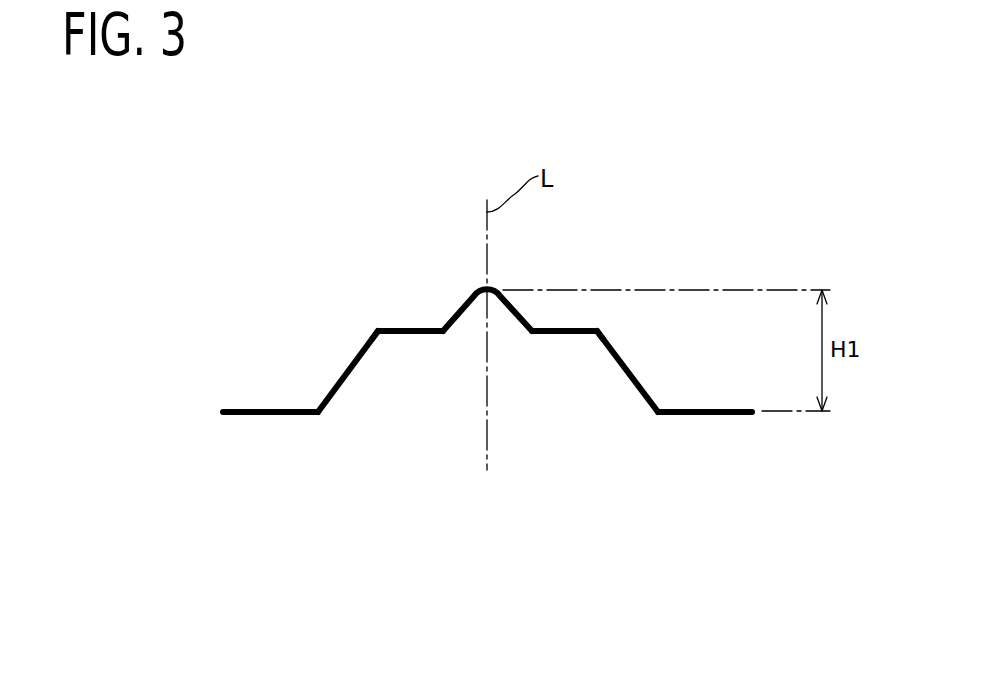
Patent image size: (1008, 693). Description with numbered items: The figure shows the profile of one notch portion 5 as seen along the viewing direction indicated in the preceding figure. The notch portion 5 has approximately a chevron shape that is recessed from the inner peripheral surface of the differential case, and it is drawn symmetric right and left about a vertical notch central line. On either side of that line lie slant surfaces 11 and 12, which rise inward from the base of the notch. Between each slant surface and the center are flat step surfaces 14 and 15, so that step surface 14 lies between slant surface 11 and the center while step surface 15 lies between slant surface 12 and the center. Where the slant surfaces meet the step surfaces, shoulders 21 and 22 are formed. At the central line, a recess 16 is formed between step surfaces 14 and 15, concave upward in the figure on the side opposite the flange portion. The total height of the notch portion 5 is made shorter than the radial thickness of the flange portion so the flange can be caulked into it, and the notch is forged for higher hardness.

The notch portion 5 is at (636, 267).
The slant surface 11 is at (355, 360).
The slant surface 12 is at (627, 363).
The step surface 14 is at (410, 330).
The step surface 15 is at (566, 330).
The recess 16 is at (505, 293).
The shoulder 21 is at (377, 329).
The shoulder 22 is at (598, 331).